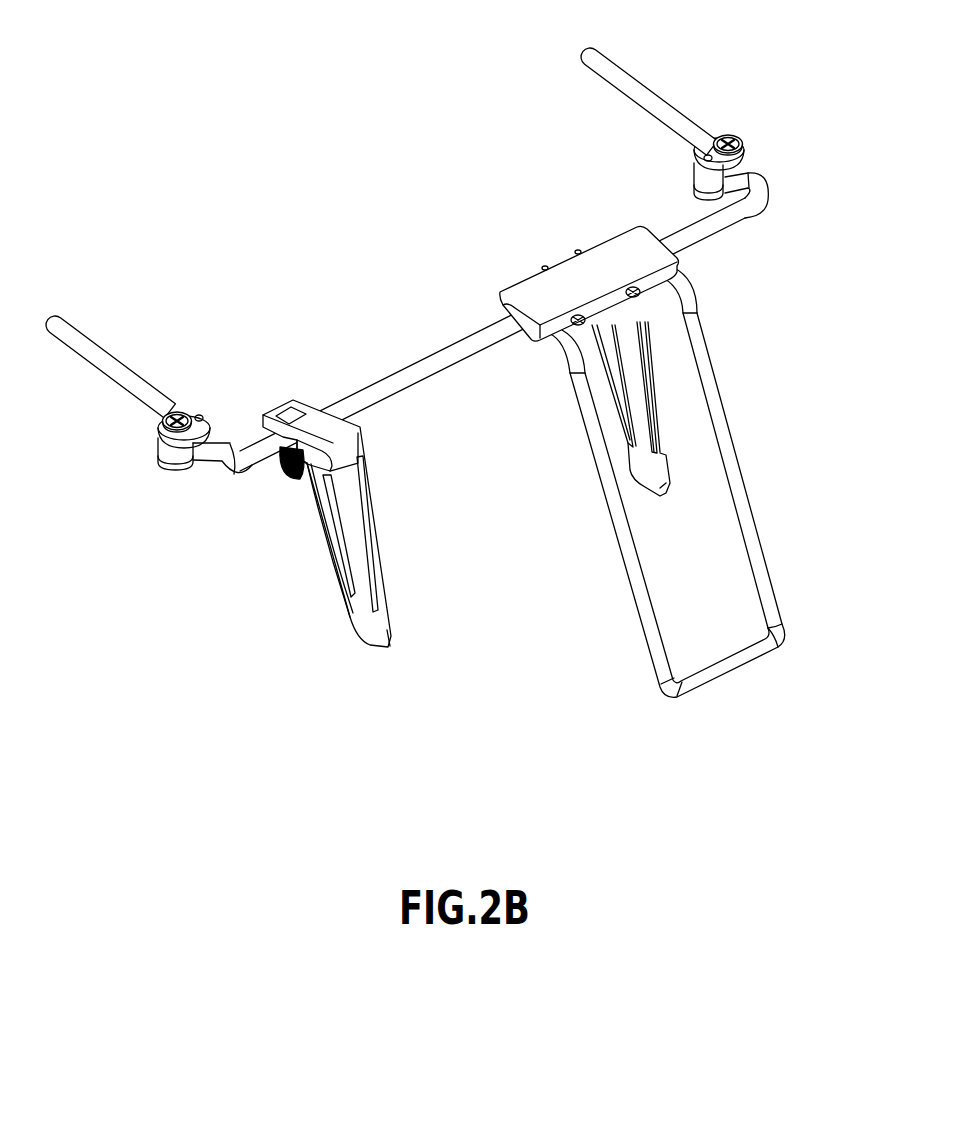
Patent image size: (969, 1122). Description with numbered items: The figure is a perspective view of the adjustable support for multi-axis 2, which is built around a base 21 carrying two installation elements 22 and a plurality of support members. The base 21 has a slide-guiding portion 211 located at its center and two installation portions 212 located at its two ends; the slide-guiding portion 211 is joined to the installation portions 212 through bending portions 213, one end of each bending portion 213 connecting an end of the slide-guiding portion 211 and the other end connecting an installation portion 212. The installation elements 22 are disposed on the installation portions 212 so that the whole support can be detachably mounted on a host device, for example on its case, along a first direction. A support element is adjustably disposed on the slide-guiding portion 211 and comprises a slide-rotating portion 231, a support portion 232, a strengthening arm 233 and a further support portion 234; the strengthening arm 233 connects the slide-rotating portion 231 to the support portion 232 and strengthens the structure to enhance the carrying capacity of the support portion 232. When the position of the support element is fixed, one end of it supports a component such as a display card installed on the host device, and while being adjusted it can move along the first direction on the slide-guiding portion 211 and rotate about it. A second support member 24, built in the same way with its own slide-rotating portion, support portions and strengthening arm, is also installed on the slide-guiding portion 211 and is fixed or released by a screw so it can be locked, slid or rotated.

The adjustable support for multi-axis 2 is at (128, 100).
The base 21 is at (492, 334).
The slide-guiding portion 211 is at (423, 372).
The installation portion 212 is at (630, 93).
The bending portion 213 is at (737, 220).
The installation element 22 is at (733, 163).
The slide-rotating portion 231 is at (576, 278).
The support portion 232 is at (653, 470).
The strengthening arm 233 is at (632, 357).
The support portion 234 is at (757, 562).
The support member 24 is at (360, 622).